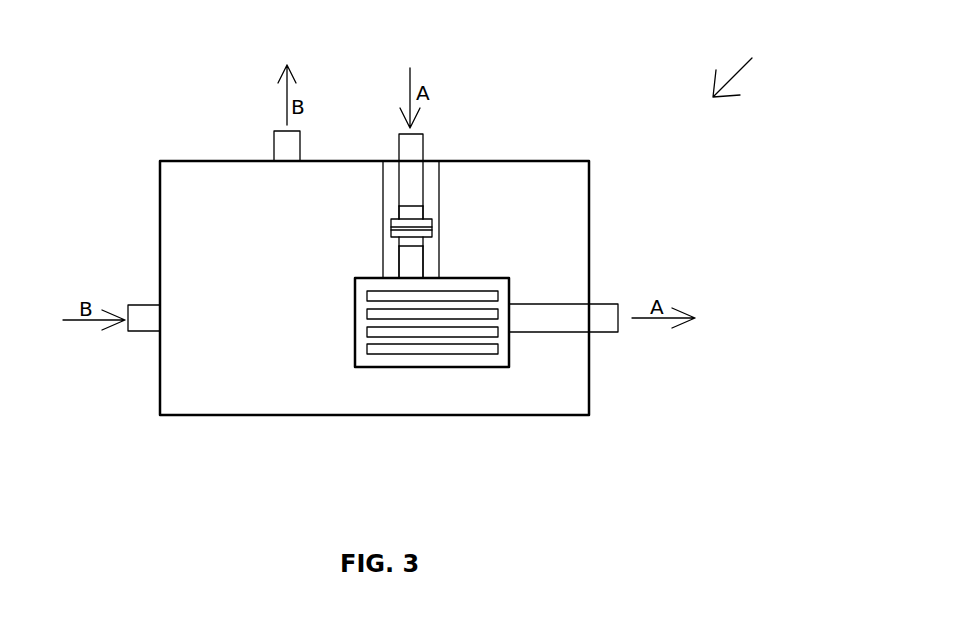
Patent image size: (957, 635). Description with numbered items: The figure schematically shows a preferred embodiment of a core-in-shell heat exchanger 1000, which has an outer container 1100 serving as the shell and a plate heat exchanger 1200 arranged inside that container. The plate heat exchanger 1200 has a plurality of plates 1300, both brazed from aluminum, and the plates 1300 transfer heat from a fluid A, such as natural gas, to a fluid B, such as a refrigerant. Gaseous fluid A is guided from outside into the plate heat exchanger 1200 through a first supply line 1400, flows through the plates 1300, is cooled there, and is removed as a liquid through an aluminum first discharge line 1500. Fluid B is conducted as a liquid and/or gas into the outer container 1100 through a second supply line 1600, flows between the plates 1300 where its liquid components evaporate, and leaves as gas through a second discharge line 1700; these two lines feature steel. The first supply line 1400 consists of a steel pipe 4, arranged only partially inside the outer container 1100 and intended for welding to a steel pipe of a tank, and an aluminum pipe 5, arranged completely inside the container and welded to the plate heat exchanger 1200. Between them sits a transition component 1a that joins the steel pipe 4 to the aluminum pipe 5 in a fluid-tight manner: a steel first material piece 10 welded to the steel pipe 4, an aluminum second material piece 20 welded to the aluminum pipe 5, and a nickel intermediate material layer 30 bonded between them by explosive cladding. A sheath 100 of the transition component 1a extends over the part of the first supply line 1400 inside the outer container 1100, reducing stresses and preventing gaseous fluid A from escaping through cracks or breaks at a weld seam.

The core-in-shell heat exchanger 1000 is at (753, 56).
The outer container 1100 is at (158, 182).
The plate heat exchanger 1200 is at (458, 367).
The plates 1300 is at (383, 347).
The first supply line 1400 is at (425, 135).
The first discharge line 1500 is at (600, 327).
The second supply line 1600 is at (137, 308).
The second discharge line 1700 is at (278, 135).
The sheath 100 is at (392, 172).
The transition component 1a is at (362, 230).
The steel pipe 4 is at (425, 147).
The first material piece 10 is at (418, 213).
The intermediate material layer 30 is at (432, 230).
The second material piece 20 is at (420, 242).
The aluminum pipe 5 is at (405, 260).